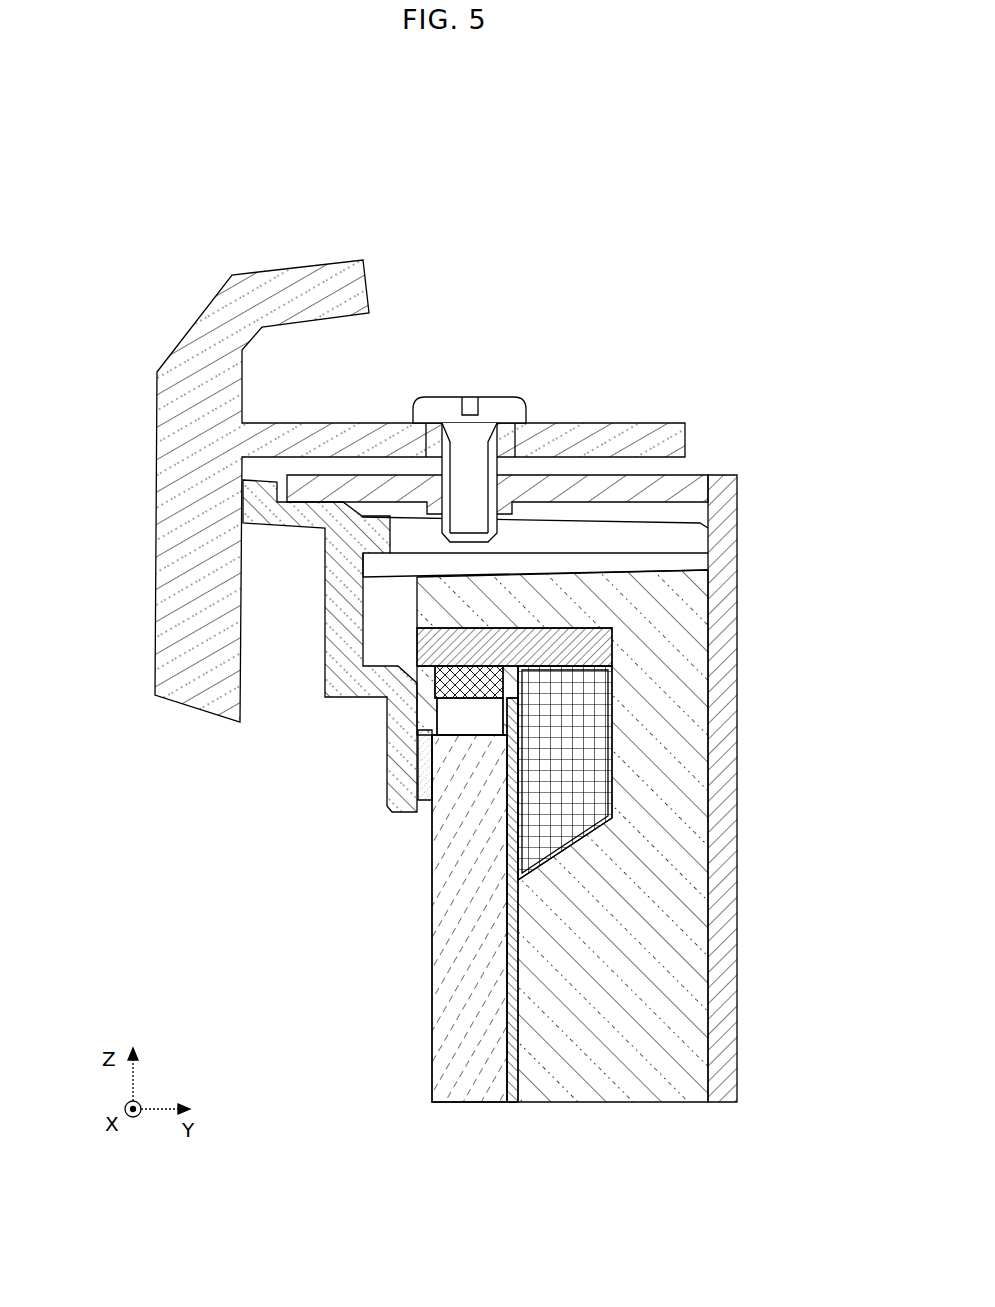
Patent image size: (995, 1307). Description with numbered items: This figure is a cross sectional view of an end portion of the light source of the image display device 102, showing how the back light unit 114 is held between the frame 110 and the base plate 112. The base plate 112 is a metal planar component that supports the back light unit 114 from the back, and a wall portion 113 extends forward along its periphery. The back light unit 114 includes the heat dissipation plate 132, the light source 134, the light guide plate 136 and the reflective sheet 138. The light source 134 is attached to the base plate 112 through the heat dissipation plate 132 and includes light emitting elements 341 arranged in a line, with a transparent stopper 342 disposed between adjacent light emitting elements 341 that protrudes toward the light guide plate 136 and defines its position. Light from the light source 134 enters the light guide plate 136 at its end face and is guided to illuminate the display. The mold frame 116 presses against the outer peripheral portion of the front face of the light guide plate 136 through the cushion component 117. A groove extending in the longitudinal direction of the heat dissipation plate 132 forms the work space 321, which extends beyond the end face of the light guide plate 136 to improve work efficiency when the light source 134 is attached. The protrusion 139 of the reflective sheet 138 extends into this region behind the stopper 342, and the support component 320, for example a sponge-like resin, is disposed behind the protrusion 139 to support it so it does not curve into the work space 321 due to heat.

The fixing structure 102 is at (699, 226).
The bracket 110 is at (157, 373).
The base plate 112 is at (724, 540).
The wall portion 113 is at (620, 480).
The back light unit 114 is at (575, 870).
The mold frame 116 is at (330, 512).
The cushion component 117 is at (428, 800).
The heat dissipation plate 132 is at (678, 915).
The light source 134 is at (597, 650).
The light guide plate 136 is at (457, 1088).
The reflective sheet 138 is at (512, 1088).
The protrusion 139 is at (513, 715).
The support component 320 is at (590, 688).
The work space 321 is at (605, 790).
The light emitting element 341 is at (435, 683).
The stopper 342 is at (437, 713).